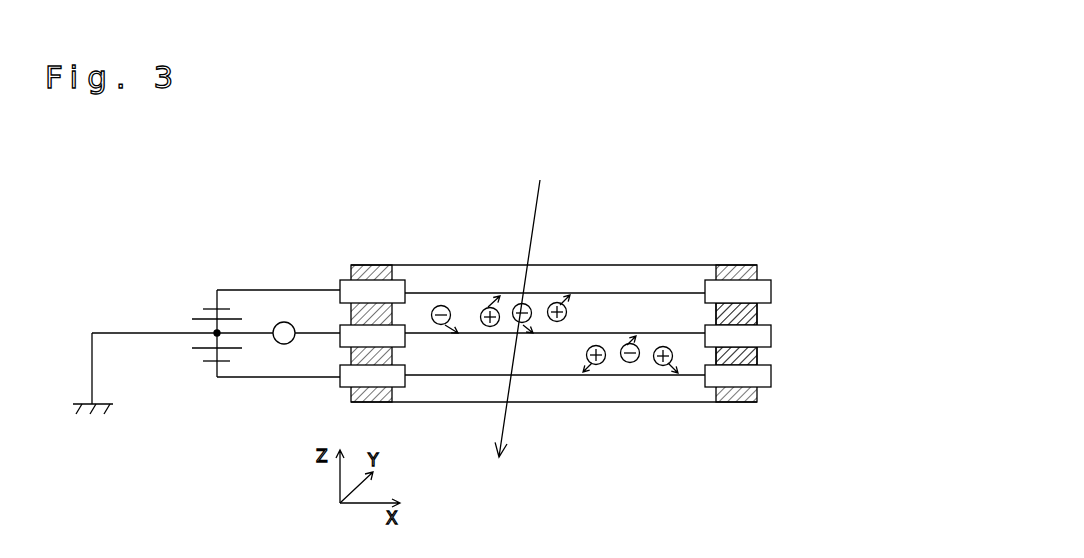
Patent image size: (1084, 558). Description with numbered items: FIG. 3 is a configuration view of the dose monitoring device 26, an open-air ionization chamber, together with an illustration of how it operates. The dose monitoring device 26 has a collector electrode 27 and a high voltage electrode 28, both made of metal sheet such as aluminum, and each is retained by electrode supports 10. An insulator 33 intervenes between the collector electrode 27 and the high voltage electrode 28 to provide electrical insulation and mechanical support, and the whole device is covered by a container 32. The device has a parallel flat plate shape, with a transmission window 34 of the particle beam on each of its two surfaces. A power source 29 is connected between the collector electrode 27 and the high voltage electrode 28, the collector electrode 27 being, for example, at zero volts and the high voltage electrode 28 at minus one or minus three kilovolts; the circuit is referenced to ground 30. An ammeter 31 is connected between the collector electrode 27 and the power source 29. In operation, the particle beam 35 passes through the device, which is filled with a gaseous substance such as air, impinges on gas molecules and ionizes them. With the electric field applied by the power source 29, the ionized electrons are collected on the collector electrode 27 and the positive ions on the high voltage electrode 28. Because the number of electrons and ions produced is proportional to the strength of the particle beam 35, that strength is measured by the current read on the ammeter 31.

The dose monitoring device 26 is at (705, 168).
The collector electrode 27 is at (680, 335).
The high voltage electrode 28 is at (623, 292).
The power source 29 is at (197, 313).
The ground 30 is at (88, 417).
The ammeter 31 is at (280, 345).
The container 32 is at (735, 265).
The insulator 33 is at (757, 316).
The transmission window 34 is at (433, 265).
The particle beam 35 is at (537, 213).
The electrode supports 10 is at (771, 287).